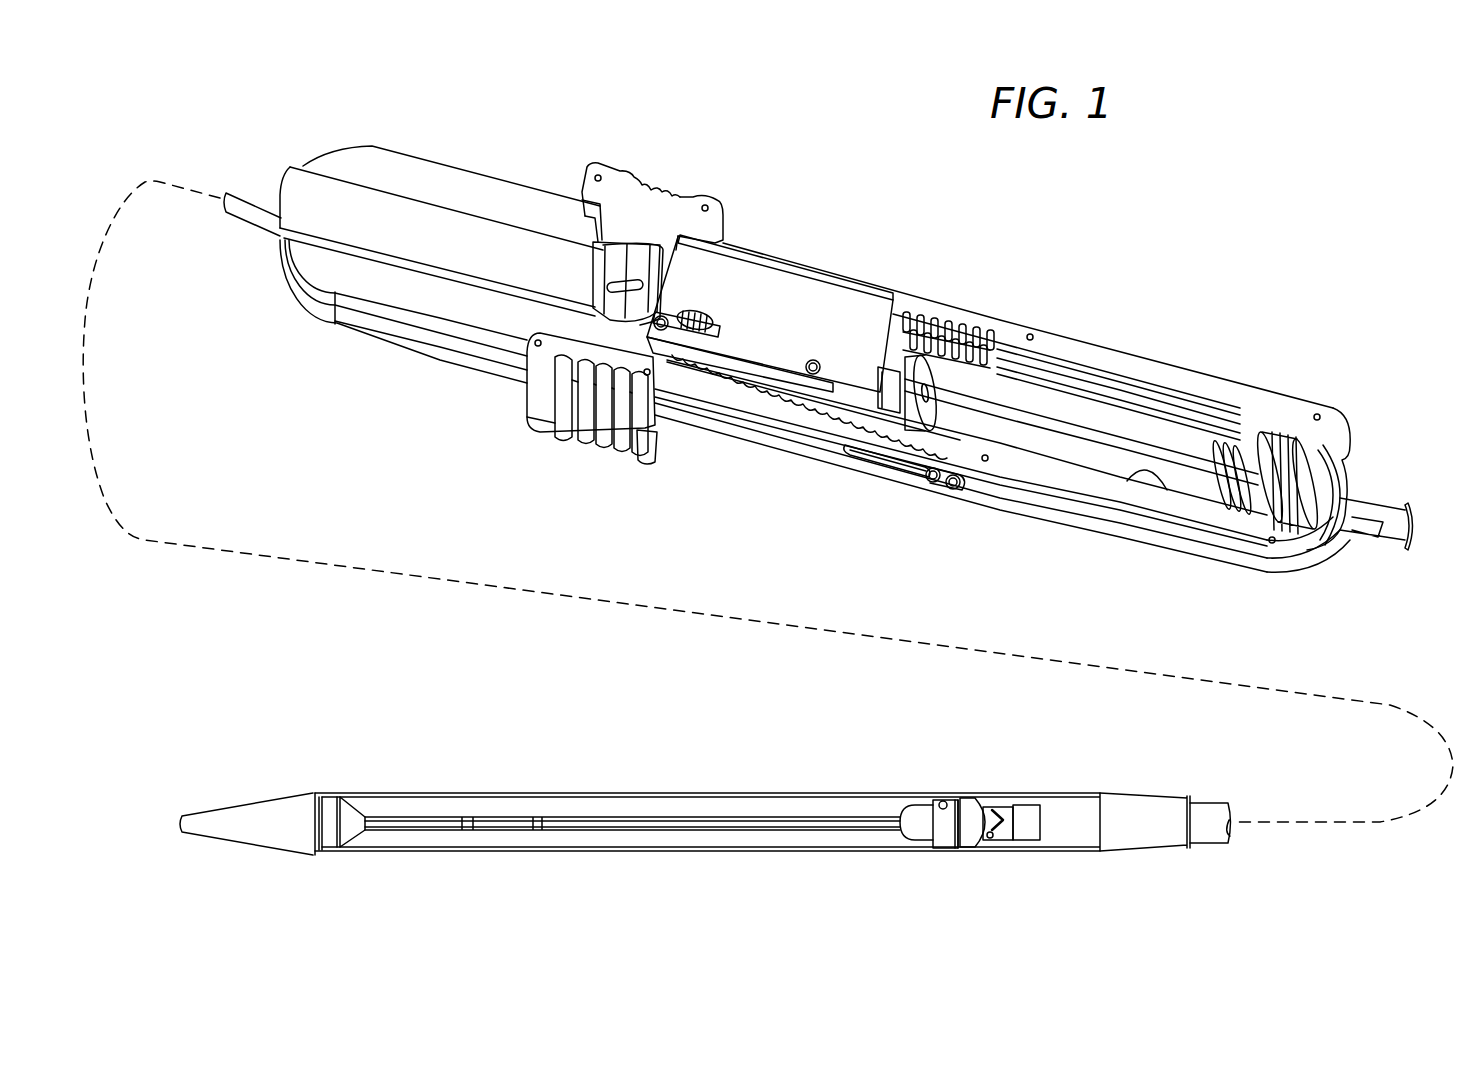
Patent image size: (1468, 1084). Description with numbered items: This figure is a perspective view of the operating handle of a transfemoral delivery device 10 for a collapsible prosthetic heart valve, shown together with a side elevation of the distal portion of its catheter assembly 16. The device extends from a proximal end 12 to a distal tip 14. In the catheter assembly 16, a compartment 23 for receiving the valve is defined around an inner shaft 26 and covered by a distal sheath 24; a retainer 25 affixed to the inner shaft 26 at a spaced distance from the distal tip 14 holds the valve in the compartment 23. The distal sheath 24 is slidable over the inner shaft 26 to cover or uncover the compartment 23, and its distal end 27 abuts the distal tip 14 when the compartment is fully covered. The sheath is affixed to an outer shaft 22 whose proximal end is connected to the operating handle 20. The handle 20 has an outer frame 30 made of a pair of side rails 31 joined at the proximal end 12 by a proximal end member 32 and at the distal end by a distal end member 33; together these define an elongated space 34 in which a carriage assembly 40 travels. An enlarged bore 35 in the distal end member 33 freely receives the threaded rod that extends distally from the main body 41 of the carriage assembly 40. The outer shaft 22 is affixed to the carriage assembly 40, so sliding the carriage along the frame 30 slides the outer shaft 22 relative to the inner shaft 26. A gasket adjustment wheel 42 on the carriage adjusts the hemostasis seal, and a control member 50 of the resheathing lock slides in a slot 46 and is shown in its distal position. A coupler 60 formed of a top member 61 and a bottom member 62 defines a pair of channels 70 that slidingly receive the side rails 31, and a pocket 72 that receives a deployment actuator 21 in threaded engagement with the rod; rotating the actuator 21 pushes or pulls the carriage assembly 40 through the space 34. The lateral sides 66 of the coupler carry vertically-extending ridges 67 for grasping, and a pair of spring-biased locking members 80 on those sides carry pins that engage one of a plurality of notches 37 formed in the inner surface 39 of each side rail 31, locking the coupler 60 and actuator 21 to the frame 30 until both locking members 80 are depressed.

The transfemoral delivery device 10 is at (333, 128).
The proximal end 12 is at (1345, 452).
The distal tip 14 is at (180, 825).
The catheter assembly 16 is at (658, 835).
The operating handle 20 is at (816, 512).
The deployment actuator 21 is at (652, 185).
The outer shaft 22 is at (275, 220).
The compartment 23 is at (752, 825).
The distal sheath 24 is at (632, 855).
The retainer 25 is at (943, 843).
The inner shaft 26 is at (1133, 443).
The distal end 27 is at (318, 790).
The outer frame 30 is at (807, 354).
The side rails 31 is at (893, 313).
The proximal end member 32 is at (1338, 435).
The distal end member 33 is at (323, 315).
The elongated space 34 is at (1048, 490).
The enlarged bore 35 is at (412, 212).
The notches 37 is at (985, 385).
The inner surface 39 is at (1166, 492).
The carriage assembly 40 is at (770, 308).
The main body 41 is at (820, 338).
The gasket adjustment wheel 42 is at (897, 417).
The slot 46 is at (740, 367).
The control member 50 is at (700, 315).
The coupler 60 is at (590, 311).
The top member 61 is at (628, 192).
The bottom member 62 is at (645, 452).
The lateral sides 66 is at (590, 429).
The ridges 67 is at (580, 433).
The channels 70 is at (663, 397).
The pocket 72 is at (668, 260).
The locking members 80 is at (557, 433).